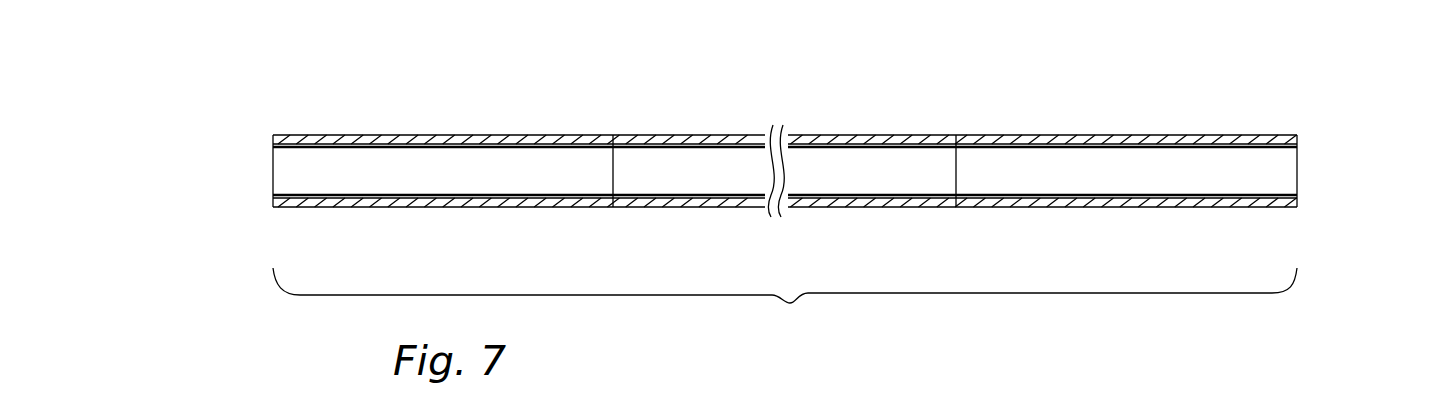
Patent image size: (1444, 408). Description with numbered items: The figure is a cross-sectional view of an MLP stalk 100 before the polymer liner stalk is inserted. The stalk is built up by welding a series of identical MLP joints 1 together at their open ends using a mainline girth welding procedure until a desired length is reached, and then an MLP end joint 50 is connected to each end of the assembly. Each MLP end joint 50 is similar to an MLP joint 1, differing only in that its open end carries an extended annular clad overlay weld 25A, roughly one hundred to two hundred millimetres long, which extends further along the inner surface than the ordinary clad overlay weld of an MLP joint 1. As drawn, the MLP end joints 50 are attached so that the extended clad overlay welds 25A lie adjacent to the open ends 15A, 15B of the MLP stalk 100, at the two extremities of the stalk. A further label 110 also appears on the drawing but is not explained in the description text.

The MLP joint 1 is at (895, 70).
The open end of MLP stalk 15A is at (273, 172).
The open end of MLP stalk 15B is at (1297, 172).
The extended annular clad overlay weld 25A is at (283, 142).
The MLP end joint 50 is at (451, 115).
The MLP stalk 100 is at (790, 303).
The section 110 is at (696, 397).